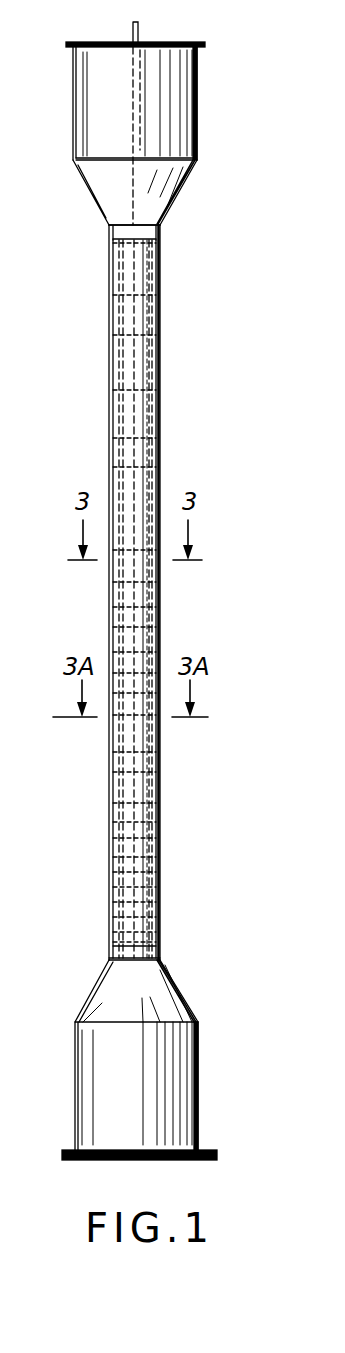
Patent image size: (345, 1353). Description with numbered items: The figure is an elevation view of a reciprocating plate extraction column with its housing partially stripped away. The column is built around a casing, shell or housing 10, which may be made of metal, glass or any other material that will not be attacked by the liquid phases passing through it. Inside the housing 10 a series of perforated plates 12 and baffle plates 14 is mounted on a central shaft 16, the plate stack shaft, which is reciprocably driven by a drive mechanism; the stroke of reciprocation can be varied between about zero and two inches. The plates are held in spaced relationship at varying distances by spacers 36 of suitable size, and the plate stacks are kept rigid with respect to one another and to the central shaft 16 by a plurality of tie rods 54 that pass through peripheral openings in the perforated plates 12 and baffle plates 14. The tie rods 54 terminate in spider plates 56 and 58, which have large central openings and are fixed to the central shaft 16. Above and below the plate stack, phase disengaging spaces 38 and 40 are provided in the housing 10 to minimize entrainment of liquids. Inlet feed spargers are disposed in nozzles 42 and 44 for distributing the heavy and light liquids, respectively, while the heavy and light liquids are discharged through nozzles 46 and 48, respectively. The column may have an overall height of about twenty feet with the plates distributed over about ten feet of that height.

The casing, shell or housing 10 is at (160, 350).
The perforated plates 12 is at (148, 567).
The baffle plates 14 is at (160, 737).
The central shaft 16 is at (139, 33).
The spacers 36 is at (113, 637).
The phase disengaging space 38 is at (197, 132).
The phase disengaging space 40 is at (198, 1065).
The nozzle 42 is at (160, 233).
The nozzle 44 is at (160, 950).
The nozzle 46 is at (198, 1130).
The nozzle 48 is at (197, 65).
The tie rods 54 is at (123, 802).
The spider plate 56 is at (150, 245).
The spider plate 58 is at (117, 940).